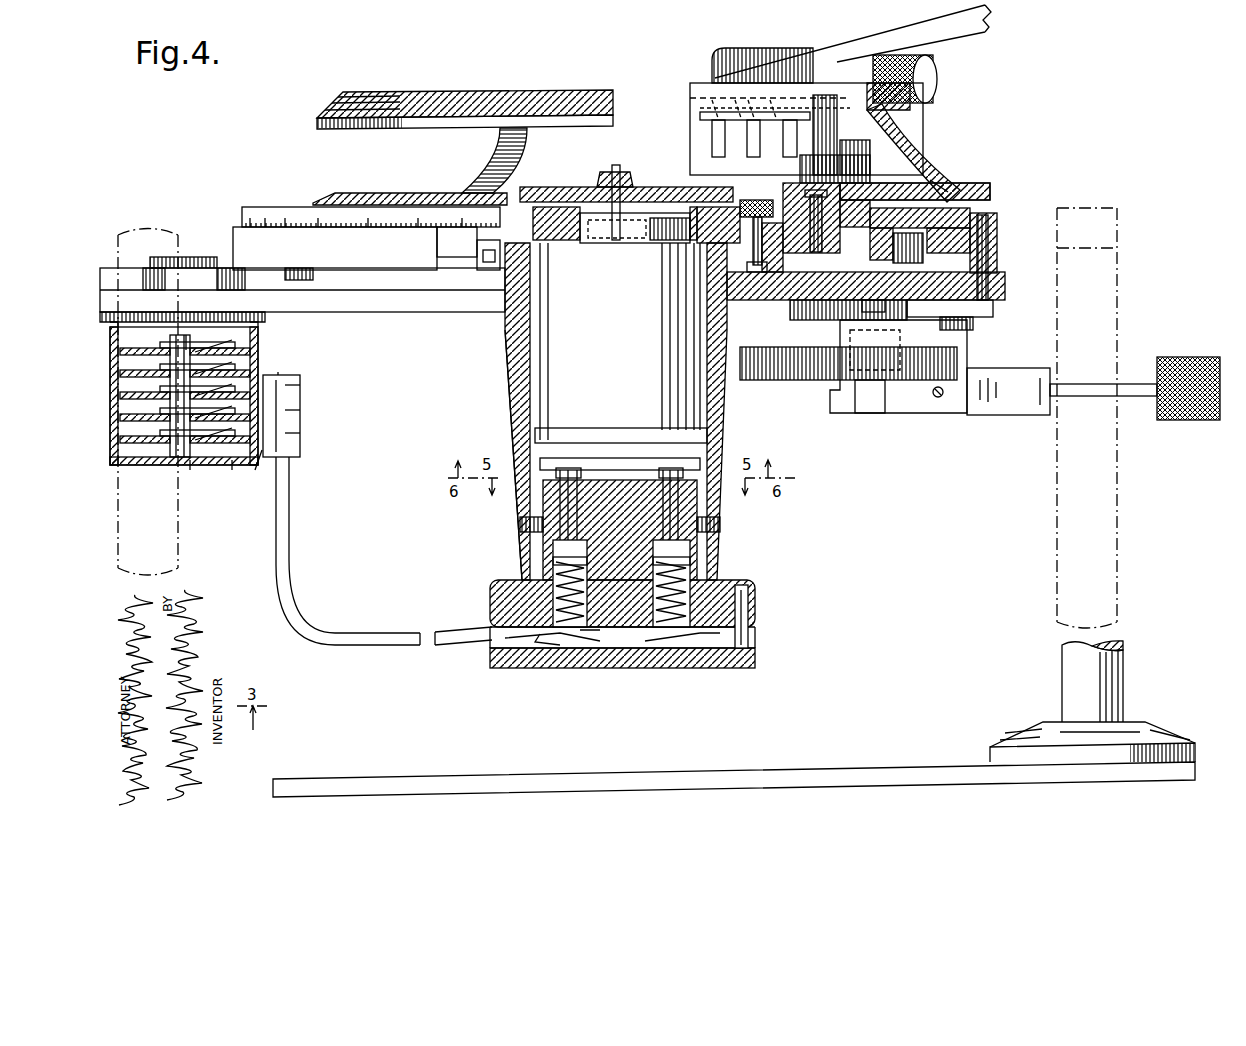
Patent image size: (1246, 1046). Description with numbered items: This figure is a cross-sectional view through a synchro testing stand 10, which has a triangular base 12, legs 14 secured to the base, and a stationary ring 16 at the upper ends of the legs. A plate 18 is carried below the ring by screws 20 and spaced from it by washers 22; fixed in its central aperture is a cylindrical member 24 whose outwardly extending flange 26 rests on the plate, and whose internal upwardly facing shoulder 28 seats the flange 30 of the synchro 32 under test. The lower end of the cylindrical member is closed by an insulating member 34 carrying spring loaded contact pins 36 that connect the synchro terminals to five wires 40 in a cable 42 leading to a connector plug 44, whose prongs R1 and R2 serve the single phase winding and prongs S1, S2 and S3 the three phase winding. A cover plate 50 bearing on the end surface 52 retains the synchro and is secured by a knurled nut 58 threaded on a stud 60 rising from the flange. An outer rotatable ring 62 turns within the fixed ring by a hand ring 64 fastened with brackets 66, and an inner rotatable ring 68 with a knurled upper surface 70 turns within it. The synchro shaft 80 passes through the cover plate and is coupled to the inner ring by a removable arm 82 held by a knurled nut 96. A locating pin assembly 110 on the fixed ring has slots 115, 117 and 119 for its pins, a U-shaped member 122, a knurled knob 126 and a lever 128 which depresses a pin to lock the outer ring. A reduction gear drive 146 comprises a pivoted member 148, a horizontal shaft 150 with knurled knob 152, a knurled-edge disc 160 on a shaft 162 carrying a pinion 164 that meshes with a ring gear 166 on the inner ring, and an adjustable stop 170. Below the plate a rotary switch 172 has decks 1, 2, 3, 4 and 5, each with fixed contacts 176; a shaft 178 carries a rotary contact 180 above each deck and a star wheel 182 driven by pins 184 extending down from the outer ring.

The stand 10 is at (1108, 580).
The triangular base 12 is at (628, 778).
The uprights or legs 14 is at (1120, 472).
The stationary ring 16 is at (996, 210).
The plate 18 is at (416, 304).
The screws 20 is at (1000, 240).
The washers 22 is at (1000, 263).
The cylindrical member 24 is at (505, 372).
The outwardly extending flange 26 is at (492, 297).
The internal upwardly facing shoulder 28 is at (512, 436).
The flange 30 is at (598, 428).
The synchro 32 is at (530, 352).
The insulating member 34 is at (632, 512).
The contact pins 36 is at (520, 523).
The wires 40 is at (522, 660).
The cable 42 is at (424, 646).
The connector plug 44 is at (292, 423).
The cover plate 50 is at (530, 200).
The end surface 52 is at (672, 243).
The knurled nut 58 is at (738, 210).
The stud 60 is at (755, 274).
The outer rotatable ring 62 is at (242, 213).
The hand ring 64 is at (406, 105).
The brackets 66 is at (482, 132).
The inner rotatable ring 68 is at (926, 186).
The knurled upper surface 70 is at (386, 201).
The shaft 80 is at (616, 170).
The removable arm 82 is at (826, 185).
The knurled nut 96 is at (600, 172).
The locating pin assembly 110 is at (925, 112).
The slot 115 is at (700, 128).
The slot 117 is at (700, 150).
The slot 119 is at (777, 140).
The U-shaped member 122 is at (731, 52).
The knurled knob 126 is at (936, 73).
The lever 128 is at (988, 20).
The reduction gear drive 146 is at (906, 415).
The member 148 is at (1010, 368).
The horizontal shaft 150 is at (1125, 384).
The knurled knob 152 is at (1212, 357).
The disc 160 is at (795, 376).
The shaft 162 is at (816, 318).
The pinion 164 is at (894, 240).
The ring gear 166 is at (818, 254).
The adjustable stop 170 is at (940, 400).
The rotary switch 172 is at (206, 411).
The contacts 176 is at (232, 466).
The shaft 178 is at (188, 340).
The rotary contact 180 is at (196, 466).
The star wheel 182 is at (275, 280).
The pins 184 is at (355, 272).
The deck 1 is at (258, 345).
The deck 2 is at (258, 362).
The deck 3 is at (185, 389).
The deck 4 is at (185, 411).
The deck 5 is at (185, 433).
The prong R1 is at (276, 366).
The prong R2 is at (254, 469).
The prong S1 is at (300, 433).
The prong S2 is at (300, 410).
The prong S3 is at (300, 385).